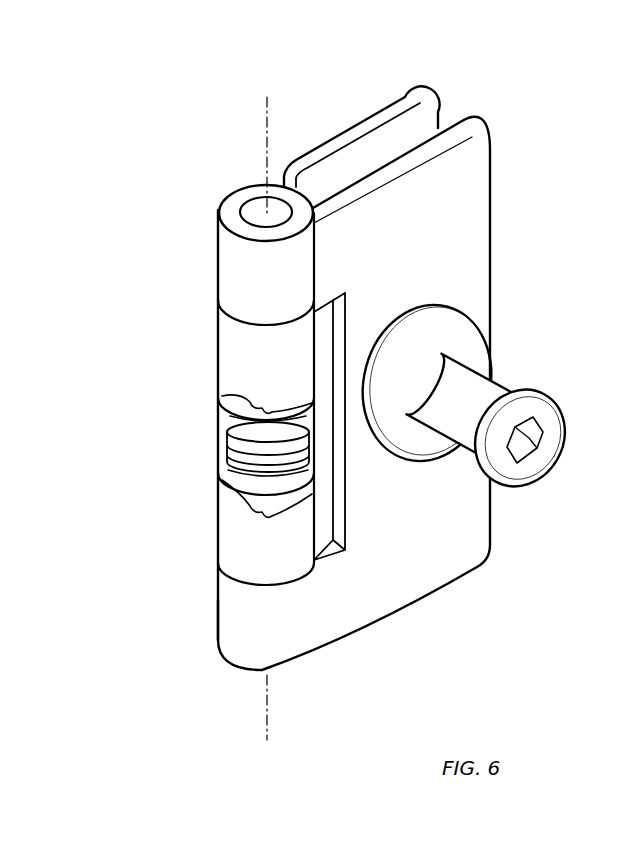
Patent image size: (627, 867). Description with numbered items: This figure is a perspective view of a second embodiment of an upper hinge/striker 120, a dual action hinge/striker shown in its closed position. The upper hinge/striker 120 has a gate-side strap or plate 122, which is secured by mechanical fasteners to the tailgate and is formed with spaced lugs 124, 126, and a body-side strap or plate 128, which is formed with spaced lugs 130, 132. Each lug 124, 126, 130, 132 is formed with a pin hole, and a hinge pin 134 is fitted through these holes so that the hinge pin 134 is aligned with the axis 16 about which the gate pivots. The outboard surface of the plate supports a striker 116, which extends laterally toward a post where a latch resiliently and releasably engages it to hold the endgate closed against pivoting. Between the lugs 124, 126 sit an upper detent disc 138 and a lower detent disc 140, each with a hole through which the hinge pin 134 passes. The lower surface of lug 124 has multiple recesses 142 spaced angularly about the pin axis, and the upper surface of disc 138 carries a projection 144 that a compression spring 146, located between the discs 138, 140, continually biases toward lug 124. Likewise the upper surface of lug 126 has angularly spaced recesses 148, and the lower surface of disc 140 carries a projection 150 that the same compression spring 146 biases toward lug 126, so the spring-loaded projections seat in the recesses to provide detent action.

The axis 16 is at (267, 102).
The striker 116 is at (500, 378).
The upper hinge/striker 120 is at (213, 103).
The gate-side strap or plate 122 is at (405, 125).
The lug 124 is at (240, 342).
The lug 126 is at (240, 553).
The body-side strap or plate 128 is at (450, 548).
The lug 130 is at (240, 265).
The lug 132 is at (240, 625).
The hinge pin 134 is at (255, 215).
The upper detent disc 138 is at (232, 432).
The lower detent disc 140 is at (243, 483).
The recess 142 is at (250, 422).
The projection 144 is at (250, 407).
The compression spring 146 is at (243, 443).
The recess 148 is at (305, 478).
The projection 150 is at (250, 512).